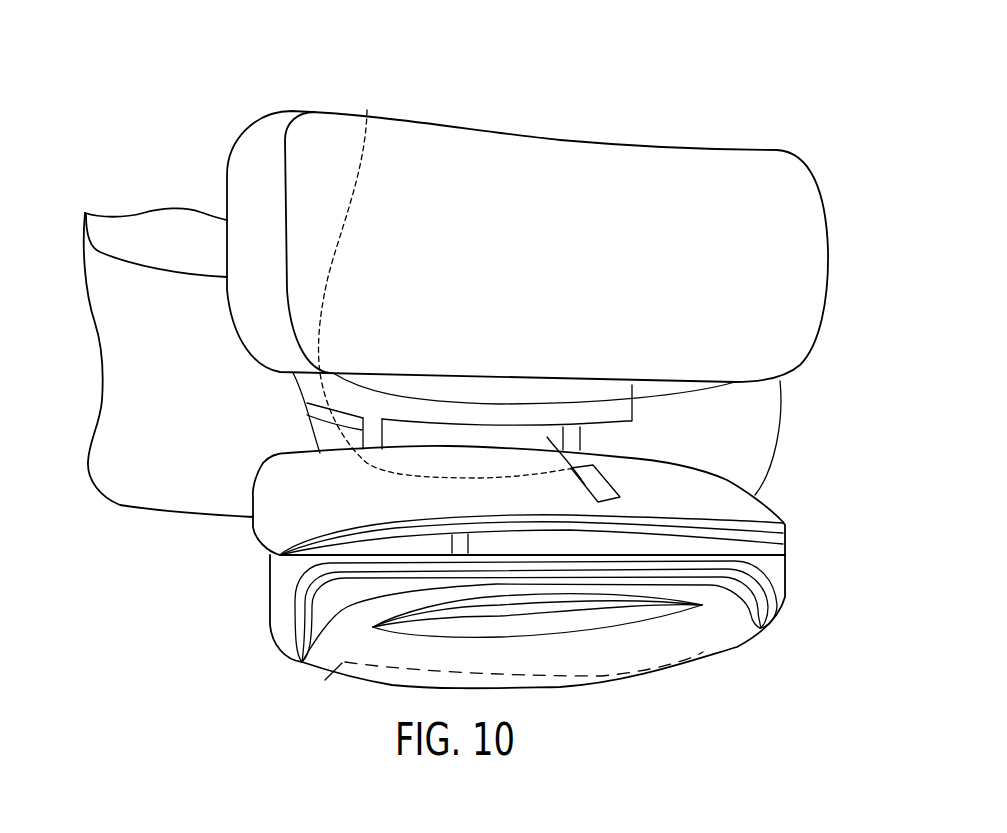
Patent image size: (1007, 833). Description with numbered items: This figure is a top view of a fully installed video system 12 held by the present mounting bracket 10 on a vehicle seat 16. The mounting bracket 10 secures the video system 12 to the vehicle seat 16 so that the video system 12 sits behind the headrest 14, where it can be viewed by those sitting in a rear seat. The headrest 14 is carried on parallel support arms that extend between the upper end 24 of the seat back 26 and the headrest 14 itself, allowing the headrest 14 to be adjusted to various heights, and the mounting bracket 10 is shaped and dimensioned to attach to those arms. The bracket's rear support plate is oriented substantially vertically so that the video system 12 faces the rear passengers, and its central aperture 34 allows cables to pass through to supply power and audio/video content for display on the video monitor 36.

The mounting bracket 10 is at (658, 490).
The video system 12 is at (788, 584).
The headrest 14 is at (537, 167).
The vehicle seat 16 is at (196, 316).
The upper end 24 is at (130, 321).
The seat back 26 is at (158, 512).
The central aperture 34 is at (367, 110).
The video monitor 36 is at (575, 690).